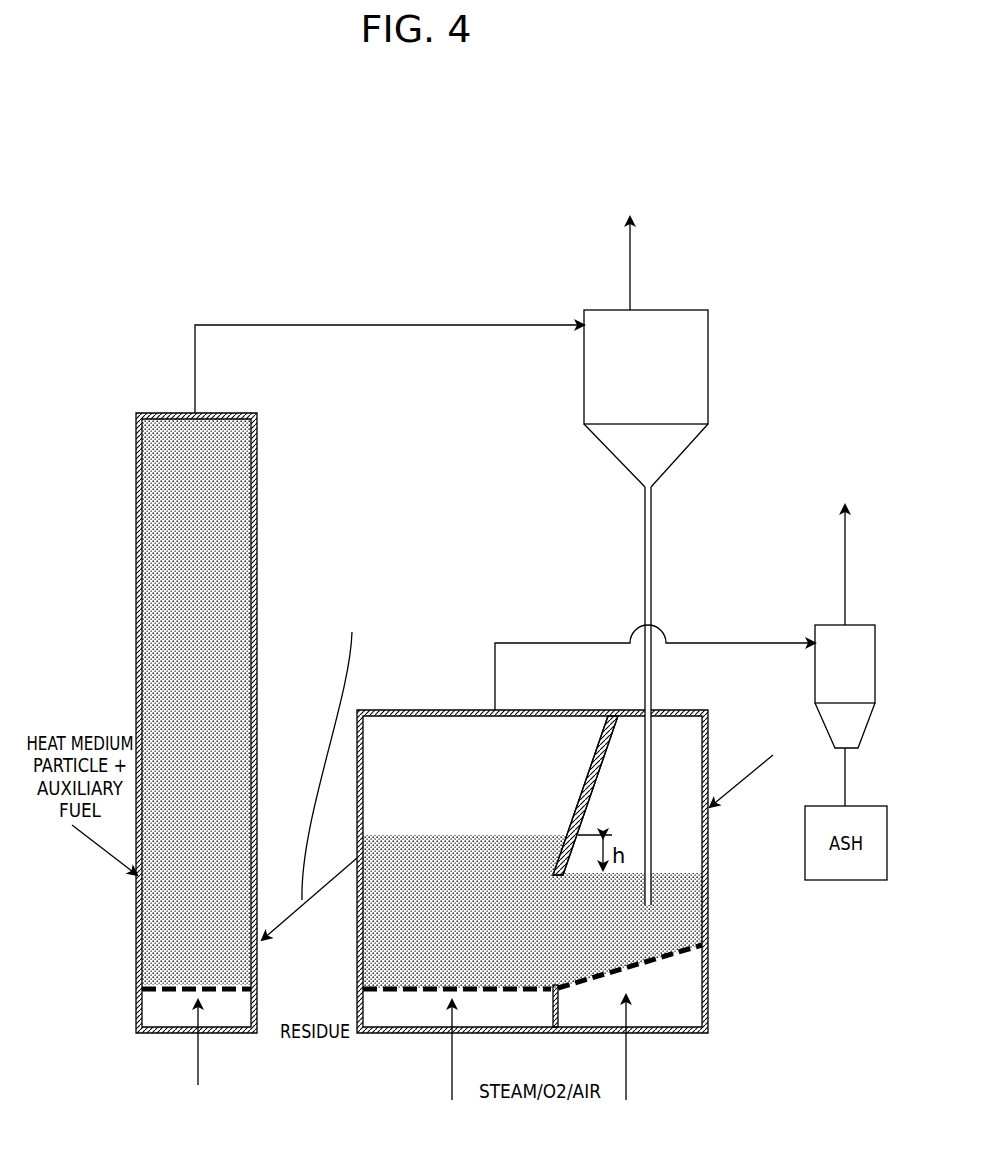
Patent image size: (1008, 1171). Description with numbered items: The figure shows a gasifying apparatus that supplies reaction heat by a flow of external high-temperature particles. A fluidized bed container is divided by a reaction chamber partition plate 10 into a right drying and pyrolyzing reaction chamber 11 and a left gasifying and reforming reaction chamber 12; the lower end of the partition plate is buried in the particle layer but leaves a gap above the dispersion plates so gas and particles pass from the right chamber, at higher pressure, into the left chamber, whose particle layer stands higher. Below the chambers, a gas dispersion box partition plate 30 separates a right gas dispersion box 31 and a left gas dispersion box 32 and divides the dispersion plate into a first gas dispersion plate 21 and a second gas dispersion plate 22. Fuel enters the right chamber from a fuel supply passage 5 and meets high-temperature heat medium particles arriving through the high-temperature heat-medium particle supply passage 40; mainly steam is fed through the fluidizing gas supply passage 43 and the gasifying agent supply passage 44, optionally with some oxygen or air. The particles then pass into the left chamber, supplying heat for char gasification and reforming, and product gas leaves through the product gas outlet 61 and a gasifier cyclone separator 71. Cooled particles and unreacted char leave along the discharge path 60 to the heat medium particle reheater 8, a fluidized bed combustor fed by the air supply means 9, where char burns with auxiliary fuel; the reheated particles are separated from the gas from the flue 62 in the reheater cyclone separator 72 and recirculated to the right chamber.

The fuel supply passage 5 is at (740, 780).
The heat medium particle reheater 8 is at (215, 675).
The air supply means 9 is at (200, 1058).
The reaction chamber partition plate 10 is at (590, 762).
The right drying and pyrolyzing reaction chamber 11 is at (687, 730).
The left gasifying and reforming reaction chamber 12 is at (412, 742).
The first gas dispersion plate 21 is at (650, 957).
The second gas dispersion plate 22 is at (417, 992).
The gas dispersion box partition plate 30 is at (558, 1030).
The right gas dispersion box 31 is at (675, 988).
The left gas dispersion box 32 is at (390, 1017).
The high-temperature heat-medium particle supply passage 40 is at (652, 535).
The fluidizing gas supply passage 43 is at (628, 1060).
The gasifying agent supply passage 44 is at (455, 1058).
The heat medium discharge 60 is at (350, 865).
The product gas outlet 61 is at (495, 670).
The gas from a flue 62 is at (340, 326).
The gasifier cyclone separator 71 is at (828, 668).
The reheater cyclone separator 72 is at (683, 372).